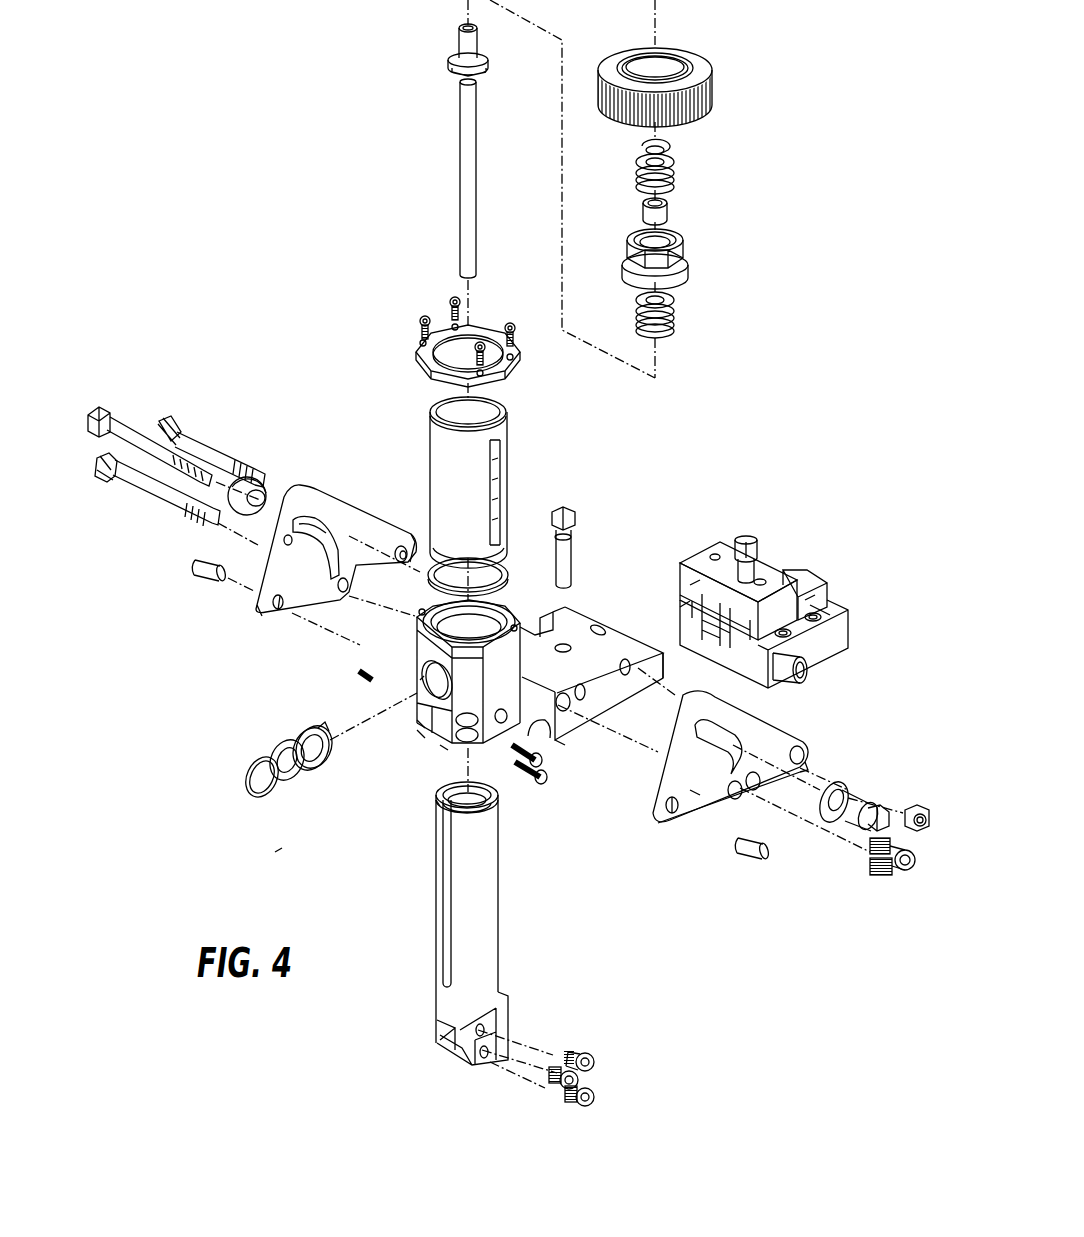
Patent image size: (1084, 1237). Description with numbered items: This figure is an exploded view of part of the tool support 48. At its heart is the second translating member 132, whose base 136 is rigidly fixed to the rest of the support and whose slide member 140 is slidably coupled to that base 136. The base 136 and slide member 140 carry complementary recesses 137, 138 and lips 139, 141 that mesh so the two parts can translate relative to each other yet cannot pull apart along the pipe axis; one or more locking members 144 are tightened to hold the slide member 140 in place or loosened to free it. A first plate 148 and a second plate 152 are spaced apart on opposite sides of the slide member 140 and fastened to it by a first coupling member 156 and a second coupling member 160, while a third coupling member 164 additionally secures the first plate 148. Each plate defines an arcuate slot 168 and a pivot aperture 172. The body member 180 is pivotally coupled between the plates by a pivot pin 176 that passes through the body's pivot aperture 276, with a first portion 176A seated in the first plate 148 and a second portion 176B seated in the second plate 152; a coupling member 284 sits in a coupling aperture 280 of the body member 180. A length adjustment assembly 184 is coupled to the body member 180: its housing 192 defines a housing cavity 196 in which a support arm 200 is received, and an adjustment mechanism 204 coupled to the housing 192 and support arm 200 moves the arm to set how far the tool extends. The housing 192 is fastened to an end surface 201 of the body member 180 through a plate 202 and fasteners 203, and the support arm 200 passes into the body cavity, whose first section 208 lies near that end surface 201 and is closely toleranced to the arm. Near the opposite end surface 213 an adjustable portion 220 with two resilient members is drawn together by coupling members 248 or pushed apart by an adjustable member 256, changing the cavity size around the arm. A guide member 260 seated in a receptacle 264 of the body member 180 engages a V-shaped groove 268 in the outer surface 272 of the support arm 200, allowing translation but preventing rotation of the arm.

The tool support 48 is at (275, 852).
The second translating member 132 is at (781, 559).
The base 136 is at (787, 584).
The recess 137 is at (560, 745).
The recess 138 is at (680, 590).
The lip 139 is at (547, 737).
The slide member 140 is at (660, 660).
The lip 141 is at (690, 580).
The locking member 144 is at (571, 520).
The first plate 148 is at (702, 792).
The second plate 152 is at (255, 598).
The first coupling member 156 is at (203, 450).
The second coupling member 160 is at (138, 486).
The third coupling member 164 is at (908, 878).
The arcuate slot 168 is at (735, 733).
The pivot aperture 172 is at (272, 620).
The pivot pin 176 is at (456, 746).
The first portion 176A is at (766, 860).
The second portion 176B is at (195, 572).
The body member 180 is at (419, 742).
The length adjustment assembly 184 is at (720, 44).
The housing 192 is at (465, 461).
The housing cavity 196 is at (478, 400).
The support arm 200 is at (473, 946).
The end surface 201 is at (422, 630).
The plate 202 is at (420, 350).
The fasteners 203 is at (452, 297).
The adjustment mechanism 204 is at (728, 242).
The first section 208 is at (498, 560).
The opposite end surface 213 is at (418, 731).
The adjustable portion 220 is at (440, 752).
The coupling member 248 is at (522, 775).
The adjustable member 256 is at (356, 674).
The guide member 260 is at (319, 770).
The receptacle 264 is at (420, 680).
The groove 268 is at (445, 965).
The outer surface 272 is at (463, 1040).
The pivot aperture 276 is at (440, 806).
The coupling aperture 280 is at (588, 633).
The coupling member 284 is at (123, 428).